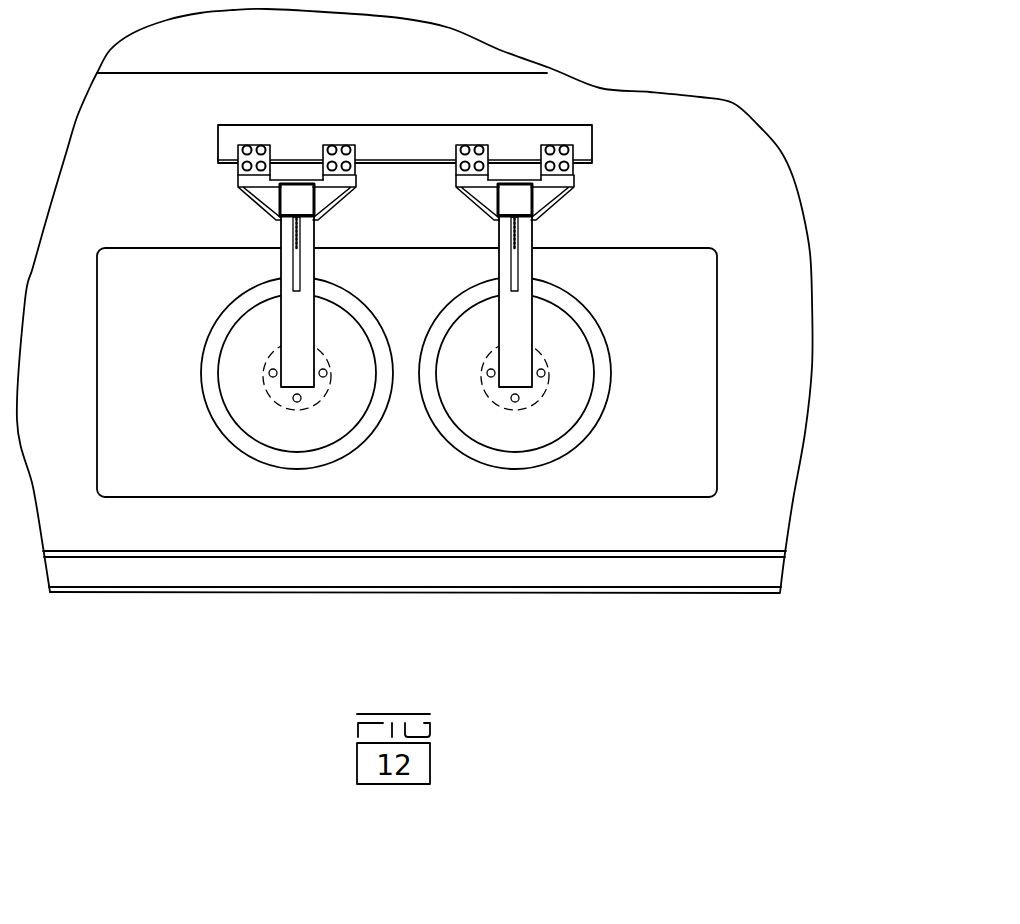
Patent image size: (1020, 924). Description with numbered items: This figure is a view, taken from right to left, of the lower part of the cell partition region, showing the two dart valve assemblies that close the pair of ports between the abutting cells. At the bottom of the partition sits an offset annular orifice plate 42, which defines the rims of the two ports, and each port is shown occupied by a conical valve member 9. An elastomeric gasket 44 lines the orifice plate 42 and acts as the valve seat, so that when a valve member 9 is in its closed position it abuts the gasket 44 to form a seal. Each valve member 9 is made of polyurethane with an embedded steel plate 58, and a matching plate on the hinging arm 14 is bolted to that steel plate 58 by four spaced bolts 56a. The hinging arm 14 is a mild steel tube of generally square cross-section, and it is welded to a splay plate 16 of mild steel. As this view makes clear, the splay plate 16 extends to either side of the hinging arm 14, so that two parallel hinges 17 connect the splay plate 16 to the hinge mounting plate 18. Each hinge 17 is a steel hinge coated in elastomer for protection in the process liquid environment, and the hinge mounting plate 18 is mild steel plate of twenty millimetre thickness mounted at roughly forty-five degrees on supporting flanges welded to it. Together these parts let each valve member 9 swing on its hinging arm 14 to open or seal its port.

The hinge mounting plate 18 is at (502, 130).
The hinge 17 is at (548, 145).
The splay plate 16 is at (556, 199).
The elastomeric gasket 44 is at (582, 310).
The hinging arm 14 is at (518, 360).
The annular orifice plate 42 is at (703, 461).
The steel plate 58 is at (489, 390).
The valve member 9 is at (508, 440).
The bolts 56a is at (545, 378).